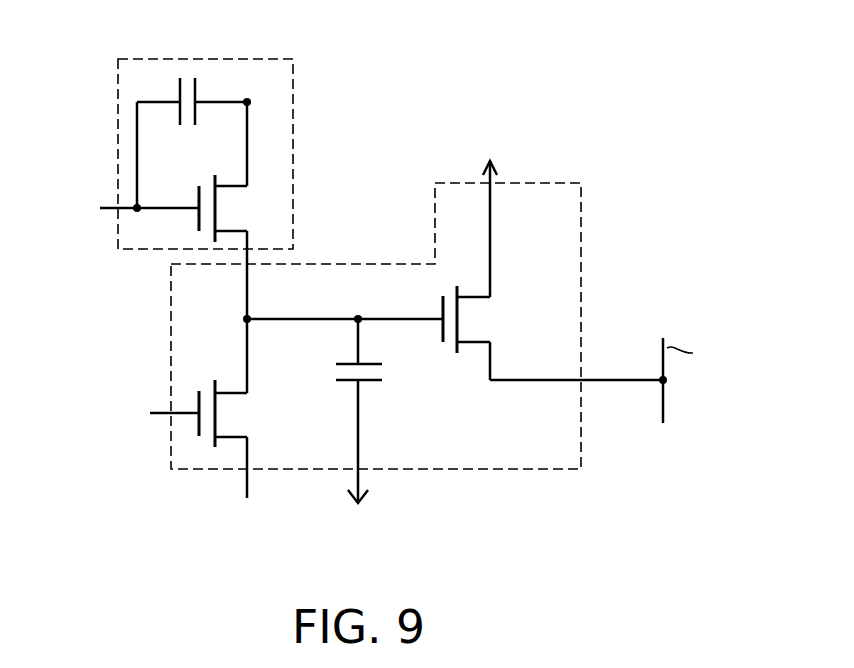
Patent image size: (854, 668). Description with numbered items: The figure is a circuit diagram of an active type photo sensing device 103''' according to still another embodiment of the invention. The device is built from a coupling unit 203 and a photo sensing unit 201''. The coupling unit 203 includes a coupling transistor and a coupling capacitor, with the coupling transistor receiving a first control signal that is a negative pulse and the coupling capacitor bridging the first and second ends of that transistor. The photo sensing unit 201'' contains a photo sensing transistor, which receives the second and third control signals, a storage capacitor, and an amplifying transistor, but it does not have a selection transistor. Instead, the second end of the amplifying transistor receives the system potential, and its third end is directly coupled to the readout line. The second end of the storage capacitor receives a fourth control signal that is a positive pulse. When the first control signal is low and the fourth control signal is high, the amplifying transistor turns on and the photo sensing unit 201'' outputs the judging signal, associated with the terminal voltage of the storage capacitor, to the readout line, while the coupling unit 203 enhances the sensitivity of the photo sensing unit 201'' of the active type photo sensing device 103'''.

The coupling unit 203 is at (267, 57).
The photo sensing unit 201'' is at (405, 304).
The active type photo sensing device 103''' is at (396, 342).